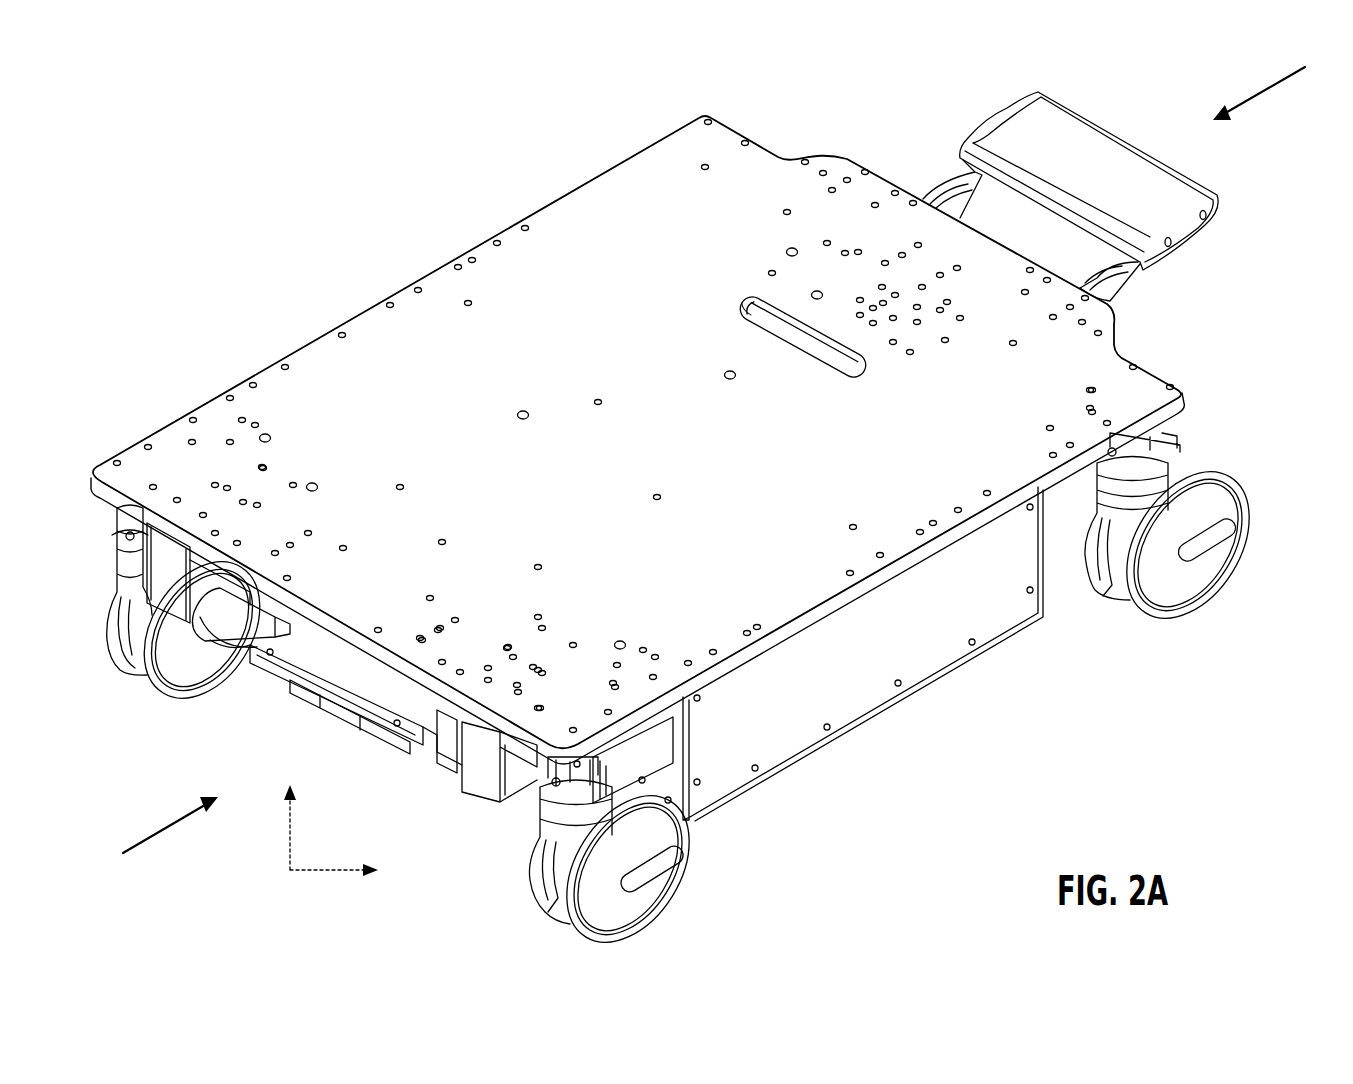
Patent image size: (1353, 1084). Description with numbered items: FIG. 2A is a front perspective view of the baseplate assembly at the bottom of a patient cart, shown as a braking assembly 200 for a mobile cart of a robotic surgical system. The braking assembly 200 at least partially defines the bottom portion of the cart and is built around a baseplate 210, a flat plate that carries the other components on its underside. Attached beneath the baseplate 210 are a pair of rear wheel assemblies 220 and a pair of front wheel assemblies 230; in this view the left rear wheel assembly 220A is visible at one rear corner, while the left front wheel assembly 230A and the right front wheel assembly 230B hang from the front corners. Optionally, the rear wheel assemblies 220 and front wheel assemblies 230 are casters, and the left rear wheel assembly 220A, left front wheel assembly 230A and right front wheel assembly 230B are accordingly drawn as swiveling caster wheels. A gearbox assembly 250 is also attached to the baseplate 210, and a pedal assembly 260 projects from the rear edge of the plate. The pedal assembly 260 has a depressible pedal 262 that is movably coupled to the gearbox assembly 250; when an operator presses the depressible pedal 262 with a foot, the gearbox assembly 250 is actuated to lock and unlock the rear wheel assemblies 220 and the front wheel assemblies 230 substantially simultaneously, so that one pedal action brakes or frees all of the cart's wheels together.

The braking assembly 200 is at (698, 503).
The baseplate 210 is at (623, 332).
The rear wheel assemblies 220 is at (1240, 428).
The left rear wheel assembly 220A is at (1177, 642).
The front wheel assemblies 230 is at (324, 844).
The left front wheel assembly 230A is at (674, 930).
The right front wheel assembly 230B is at (147, 702).
The gearbox assembly 250 is at (1084, 177).
The pedal assembly 260 is at (1198, 278).
The depressible pedal 262 is at (1078, 140).